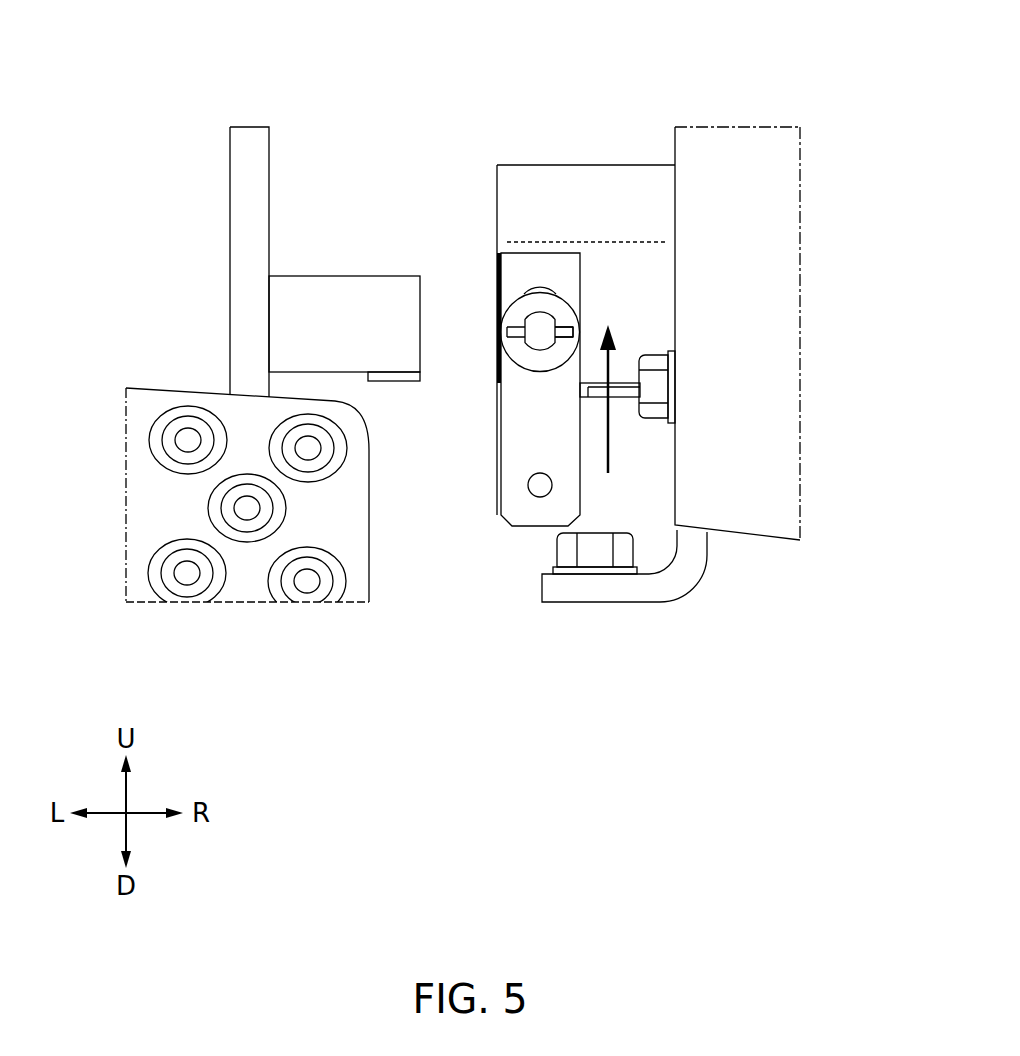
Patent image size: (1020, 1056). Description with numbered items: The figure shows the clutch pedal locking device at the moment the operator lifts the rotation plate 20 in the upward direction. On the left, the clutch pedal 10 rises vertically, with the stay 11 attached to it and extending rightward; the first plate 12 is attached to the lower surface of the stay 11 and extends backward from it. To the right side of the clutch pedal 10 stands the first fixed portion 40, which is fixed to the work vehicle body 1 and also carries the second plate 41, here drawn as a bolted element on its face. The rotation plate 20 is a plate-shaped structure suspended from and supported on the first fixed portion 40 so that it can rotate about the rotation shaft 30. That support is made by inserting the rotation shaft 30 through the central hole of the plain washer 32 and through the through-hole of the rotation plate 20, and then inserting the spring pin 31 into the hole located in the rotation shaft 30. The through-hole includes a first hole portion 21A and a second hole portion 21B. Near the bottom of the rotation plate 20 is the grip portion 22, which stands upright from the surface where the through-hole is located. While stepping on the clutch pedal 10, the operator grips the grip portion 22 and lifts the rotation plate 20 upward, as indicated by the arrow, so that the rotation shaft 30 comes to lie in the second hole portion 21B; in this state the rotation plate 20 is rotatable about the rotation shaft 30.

The work vehicle body 1 is at (767, 297).
The clutch pedal 10 is at (240, 343).
The stay 11 is at (328, 313).
The first plate 12 is at (394, 381).
The rotation plate 20 is at (528, 440).
The first hole portion 21A is at (524, 275).
The second hole portion 21B is at (562, 354).
The grip portion 22 is at (538, 497).
The rotation shaft 30 is at (540, 323).
The spring pin 31 is at (567, 325).
The plain washer 32 is at (523, 308).
The first fixed portion 40 is at (643, 278).
The second plate 41 is at (622, 390).